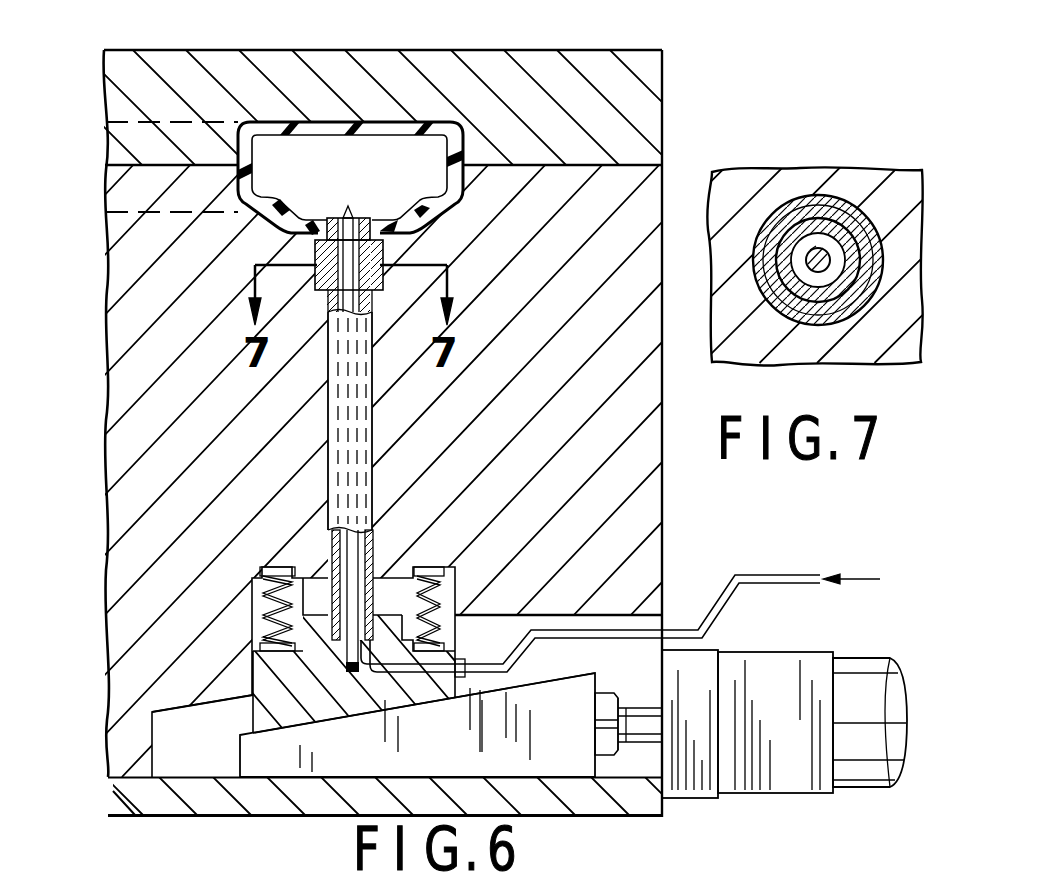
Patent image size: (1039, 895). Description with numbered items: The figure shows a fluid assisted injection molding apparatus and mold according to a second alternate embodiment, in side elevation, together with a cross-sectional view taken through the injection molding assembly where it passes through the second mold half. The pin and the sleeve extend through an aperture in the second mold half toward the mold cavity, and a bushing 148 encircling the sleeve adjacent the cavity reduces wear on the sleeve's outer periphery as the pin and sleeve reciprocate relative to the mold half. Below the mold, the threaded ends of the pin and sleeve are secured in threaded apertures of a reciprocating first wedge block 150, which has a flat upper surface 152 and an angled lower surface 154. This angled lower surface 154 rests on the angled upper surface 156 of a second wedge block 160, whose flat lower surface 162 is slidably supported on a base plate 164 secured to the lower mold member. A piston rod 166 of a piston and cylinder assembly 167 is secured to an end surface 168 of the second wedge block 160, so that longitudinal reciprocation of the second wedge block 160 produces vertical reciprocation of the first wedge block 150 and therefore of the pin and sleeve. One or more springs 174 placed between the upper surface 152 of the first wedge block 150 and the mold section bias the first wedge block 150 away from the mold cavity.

In FIG. 6, the bushing 148 is at (382, 258).
In FIG. 7, the bushing 148 is at (777, 307).
In FIG. 6, the first wedge block 150 is at (240, 663).
In FIG. 6, the flat upper surface 152 is at (320, 612).
In FIG. 6, the springs 174 is at (458, 578).
In FIG. 6, the second wedge block 160 is at (228, 743).
In FIG. 6, the angled lower surface 154 is at (318, 720).
In FIG. 6, the angled upper surface 156 is at (485, 724).
In FIG. 6, the flat lower surface 162 is at (263, 780).
In FIG. 6, the base plate 164 is at (113, 816).
In FIG. 6, the end surface 168 is at (597, 686).
In FIG. 6, the piston rod 166 is at (646, 746).
In FIG. 6, the piston and cylinder assembly 167 is at (796, 645).